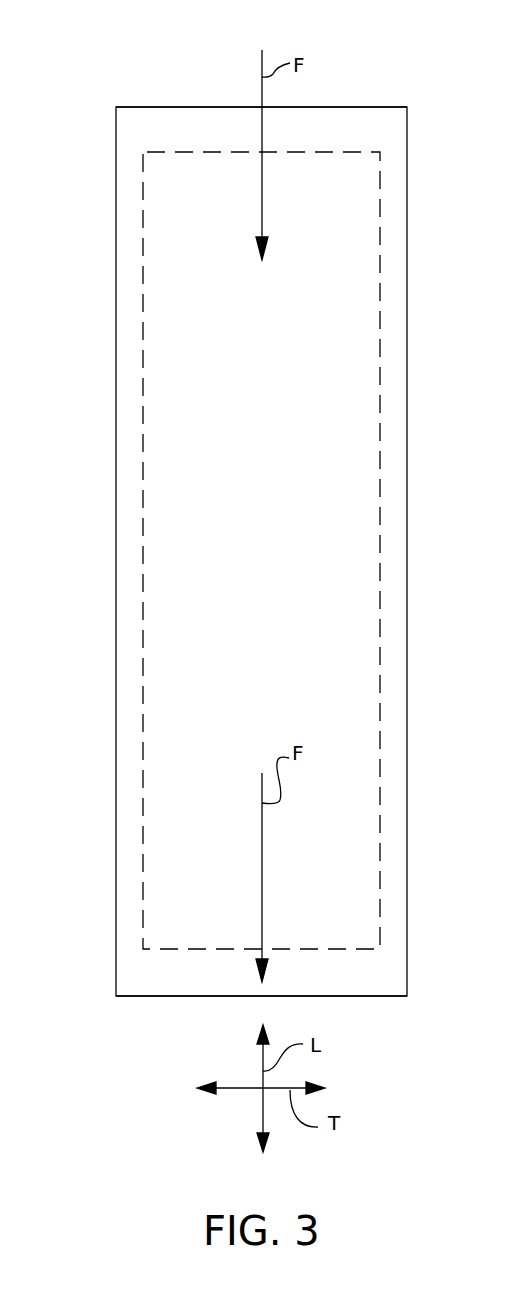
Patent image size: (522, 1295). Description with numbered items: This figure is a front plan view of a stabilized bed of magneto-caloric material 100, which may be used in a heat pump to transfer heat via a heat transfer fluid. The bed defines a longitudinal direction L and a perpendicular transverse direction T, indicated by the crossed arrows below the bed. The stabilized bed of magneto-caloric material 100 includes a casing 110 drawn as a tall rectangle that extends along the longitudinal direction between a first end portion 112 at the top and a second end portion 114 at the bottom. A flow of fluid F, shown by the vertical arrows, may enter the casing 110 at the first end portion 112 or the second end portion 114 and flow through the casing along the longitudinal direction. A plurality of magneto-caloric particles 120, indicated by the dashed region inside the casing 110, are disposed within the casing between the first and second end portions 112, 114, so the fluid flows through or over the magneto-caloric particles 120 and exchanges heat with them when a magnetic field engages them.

The stabilized bed of magneto-caloric material 100 is at (104, 48).
The casing 110 is at (116, 358).
The first end portion 112 is at (102, 120).
The second end portion 114 is at (103, 966).
The magneto-caloric particles 120 is at (140, 531).